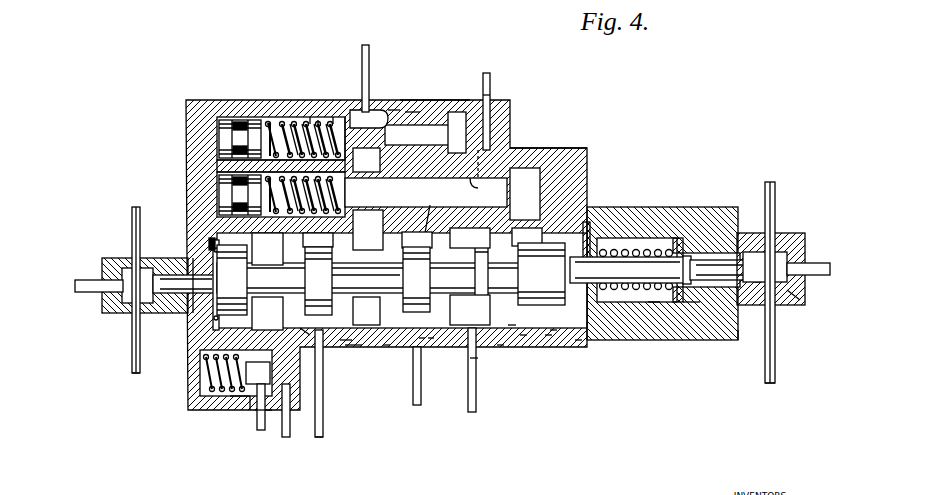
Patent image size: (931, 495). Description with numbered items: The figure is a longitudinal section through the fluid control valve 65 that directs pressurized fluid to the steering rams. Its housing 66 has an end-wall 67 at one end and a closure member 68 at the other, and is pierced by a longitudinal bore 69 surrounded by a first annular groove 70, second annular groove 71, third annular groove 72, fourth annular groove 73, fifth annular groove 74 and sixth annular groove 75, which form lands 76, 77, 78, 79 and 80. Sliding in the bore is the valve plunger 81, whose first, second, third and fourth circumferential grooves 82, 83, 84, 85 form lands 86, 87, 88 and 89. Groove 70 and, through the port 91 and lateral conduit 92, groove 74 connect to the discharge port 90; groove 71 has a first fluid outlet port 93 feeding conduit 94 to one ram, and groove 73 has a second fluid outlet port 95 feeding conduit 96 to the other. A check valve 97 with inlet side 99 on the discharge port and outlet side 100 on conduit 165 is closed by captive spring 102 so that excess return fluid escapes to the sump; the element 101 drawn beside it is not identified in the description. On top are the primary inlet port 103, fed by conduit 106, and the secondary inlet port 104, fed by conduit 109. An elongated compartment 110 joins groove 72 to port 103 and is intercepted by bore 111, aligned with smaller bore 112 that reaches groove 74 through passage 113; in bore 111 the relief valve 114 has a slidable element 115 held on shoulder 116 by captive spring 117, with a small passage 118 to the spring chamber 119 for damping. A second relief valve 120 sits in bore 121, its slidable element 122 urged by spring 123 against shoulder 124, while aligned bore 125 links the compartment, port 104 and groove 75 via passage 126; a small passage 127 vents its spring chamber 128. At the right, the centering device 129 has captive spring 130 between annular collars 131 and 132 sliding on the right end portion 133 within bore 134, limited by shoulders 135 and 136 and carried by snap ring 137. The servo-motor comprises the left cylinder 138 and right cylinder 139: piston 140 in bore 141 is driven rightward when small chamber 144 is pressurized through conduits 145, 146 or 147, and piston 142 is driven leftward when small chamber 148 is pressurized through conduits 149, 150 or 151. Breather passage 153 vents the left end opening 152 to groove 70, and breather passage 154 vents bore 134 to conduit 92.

The control valve 65 is at (548, 127).
The housing 66 is at (436, 99).
The end-wall 67 is at (186, 108).
The closure member 68 is at (652, 207).
The bore 69 is at (210, 246).
The first annular groove 70 is at (267, 249).
The second annular groove 71 is at (349, 347).
The third annular groove 72 is at (380, 320).
The fourth annular groove 73 is at (431, 341).
The fifth annular groove 74 is at (452, 337).
The sixth annular groove 75 is at (524, 337).
The land 76 is at (343, 347).
The land 77 is at (359, 347).
The land 78 is at (387, 347).
The land 79 is at (446, 320).
The land 80 is at (500, 347).
The movable valve member 81 is at (579, 342).
The first circumferential groove 82 is at (267, 313).
The second circumferential groove 83 is at (366, 311).
The third circumferential groove 84 is at (470, 310).
The fourth circumferential groove 85 is at (512, 327).
The land 86 is at (318, 274).
The land 87 is at (434, 211).
The land 88 is at (482, 248).
The land 89 is at (554, 332).
The discharge port 90 is at (287, 398).
The port 91 is at (477, 360).
The laterally extending conduit 92 is at (351, 346).
The first fluid outlet port 93 is at (306, 333).
The conduit 94 is at (324, 432).
The second fluid outlet port 95 is at (423, 341).
The conduit 96 is at (413, 396).
The check valve 97 is at (236, 408).
The inlet side 99 is at (266, 431).
The outlet side 100 is at (251, 413).
The pin 101 is at (296, 438).
The captive spring 102 is at (200, 386).
The primary inlet port 103 is at (368, 108).
The secondary inlet port 104 is at (490, 93).
The conduit 106 is at (366, 47).
The conduit 109 is at (487, 65).
The elongated compartment 110 is at (368, 199).
The bore 111 is at (302, 123).
The bore 112 is at (412, 110).
The passage 113 is at (513, 130).
The relief valve 114 is at (334, 116).
The slidable element 115 is at (317, 121).
The shoulder 116 is at (393, 110).
The captive spring 117 is at (274, 123).
The small passage 118 is at (344, 113).
The spring chamber 119 is at (257, 101).
The second relief valve 120 is at (312, 116).
The bore 121 is at (190, 166).
The slidable element 122 is at (365, 276).
The captive spring 123 is at (228, 189).
The shoulder 124 is at (425, 132).
The bore 125 is at (485, 174).
The passage 126 is at (542, 220).
The small passage 127 is at (426, 192).
The spring chamber 128 is at (232, 206).
The centering device 129 is at (690, 228).
The captive spring 130 is at (660, 247).
The annular collar 131 is at (590, 222).
The annular collar 132 is at (689, 332).
The right end portion 133 is at (638, 305).
The bore 134 is at (656, 332).
The shoulder 135 is at (556, 252).
The shoulder 136 is at (690, 240).
The snap ring 137 is at (736, 212).
The left cylinder 138 is at (108, 256).
The right cylinder 139 is at (801, 231).
The piston 140 is at (167, 295).
The bore 141 is at (193, 263).
The piston 142 is at (739, 342).
The small chamber 144 is at (128, 306).
The conduit 145 is at (132, 369).
The conduit 146 is at (89, 294).
The conduit 147 is at (132, 213).
The small chamber 148 is at (801, 300).
The conduit 149 is at (777, 355).
The conduit 150 is at (831, 263).
The conduit 151 is at (776, 196).
The left end opening 152 is at (205, 322).
The breather passage 153 is at (241, 312).
The breather passage 154 is at (548, 337).
The conduit 165 is at (258, 432).